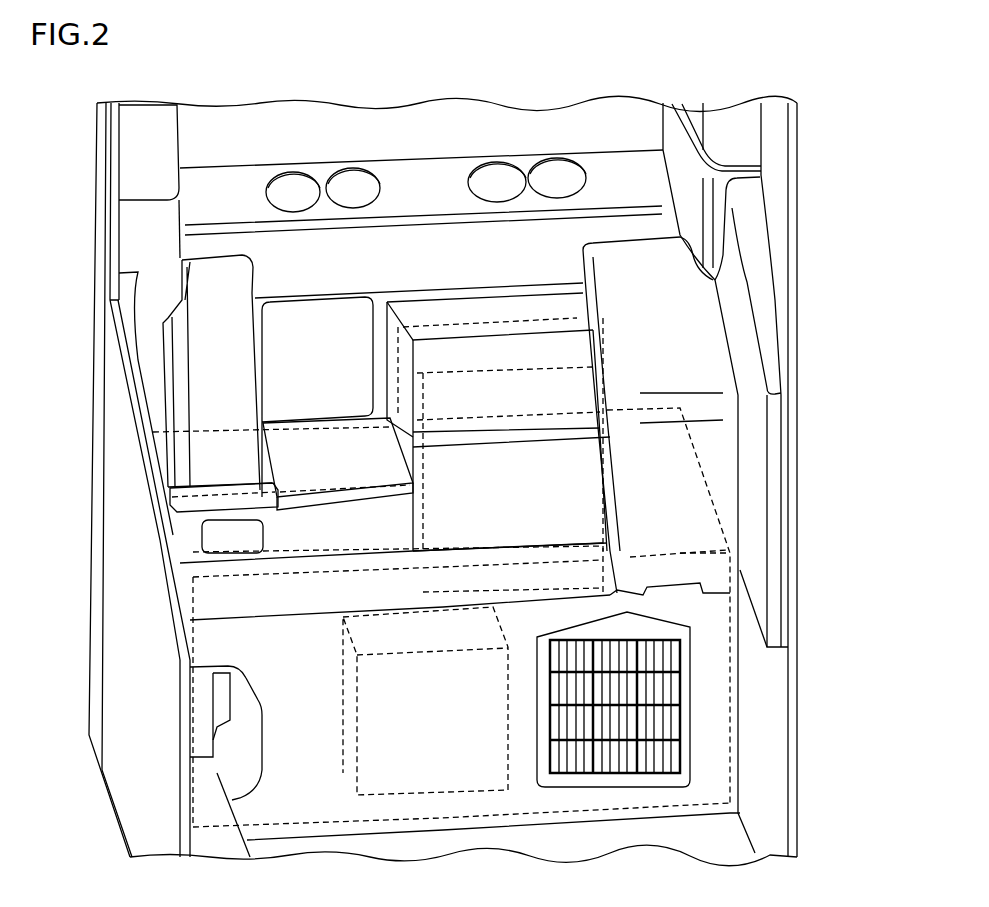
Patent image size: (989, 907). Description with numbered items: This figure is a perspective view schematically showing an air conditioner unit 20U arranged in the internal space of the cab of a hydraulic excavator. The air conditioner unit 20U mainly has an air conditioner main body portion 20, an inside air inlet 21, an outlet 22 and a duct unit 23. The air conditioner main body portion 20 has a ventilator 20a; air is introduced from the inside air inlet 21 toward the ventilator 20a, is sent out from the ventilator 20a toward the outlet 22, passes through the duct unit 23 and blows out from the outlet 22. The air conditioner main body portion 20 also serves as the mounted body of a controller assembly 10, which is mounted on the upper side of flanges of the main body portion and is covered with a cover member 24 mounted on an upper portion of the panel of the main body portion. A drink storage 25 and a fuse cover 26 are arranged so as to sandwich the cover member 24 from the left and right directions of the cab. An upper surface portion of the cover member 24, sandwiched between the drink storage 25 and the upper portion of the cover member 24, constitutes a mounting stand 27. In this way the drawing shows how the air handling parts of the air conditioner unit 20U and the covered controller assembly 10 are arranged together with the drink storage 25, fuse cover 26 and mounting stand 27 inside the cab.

The controller assembly 10 is at (600, 473).
The air conditioner main body portion 20 is at (527, 797).
The air conditioner unit 20U is at (338, 797).
The ventilator 20a is at (450, 727).
The inside air inlet 21 is at (613, 727).
The outlet 22 is at (556, 178).
The duct unit 23 is at (451, 255).
The cover member 24 is at (567, 345).
The drink storage 25 is at (222, 390).
The fuse cover 26 is at (687, 433).
The mounting stand 27 is at (317, 457).